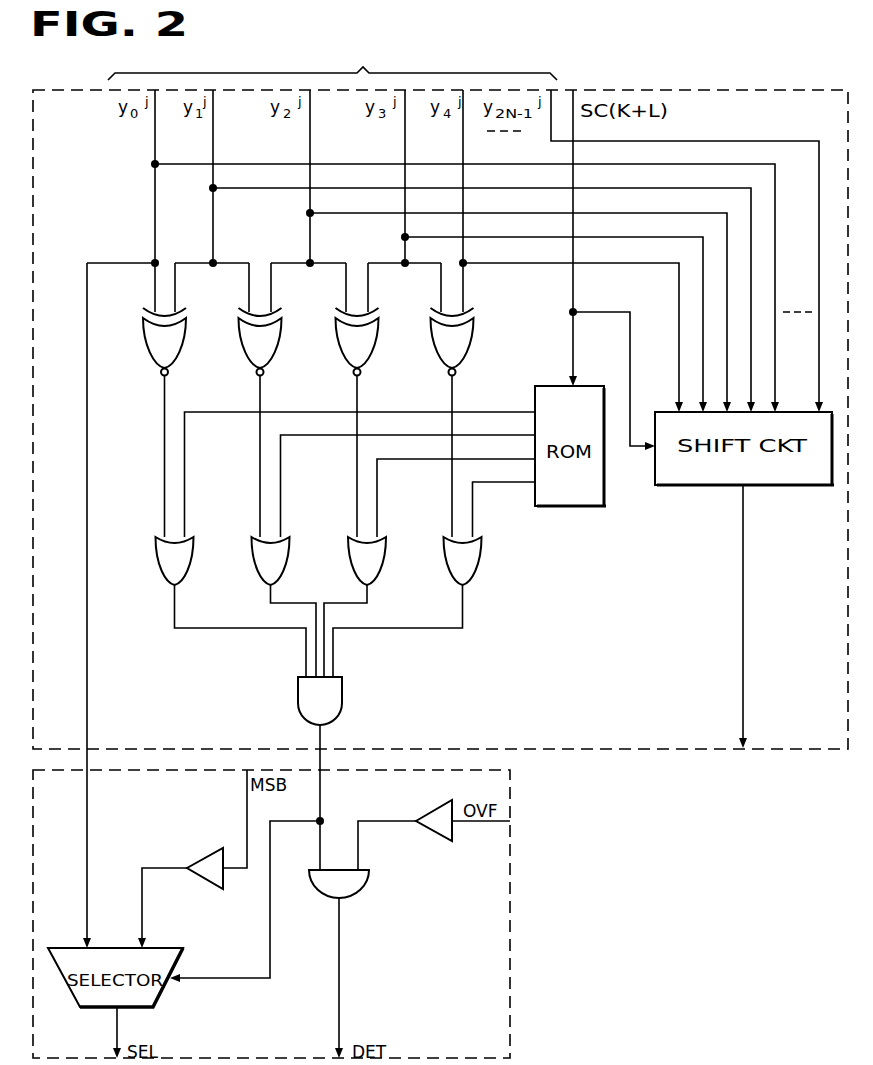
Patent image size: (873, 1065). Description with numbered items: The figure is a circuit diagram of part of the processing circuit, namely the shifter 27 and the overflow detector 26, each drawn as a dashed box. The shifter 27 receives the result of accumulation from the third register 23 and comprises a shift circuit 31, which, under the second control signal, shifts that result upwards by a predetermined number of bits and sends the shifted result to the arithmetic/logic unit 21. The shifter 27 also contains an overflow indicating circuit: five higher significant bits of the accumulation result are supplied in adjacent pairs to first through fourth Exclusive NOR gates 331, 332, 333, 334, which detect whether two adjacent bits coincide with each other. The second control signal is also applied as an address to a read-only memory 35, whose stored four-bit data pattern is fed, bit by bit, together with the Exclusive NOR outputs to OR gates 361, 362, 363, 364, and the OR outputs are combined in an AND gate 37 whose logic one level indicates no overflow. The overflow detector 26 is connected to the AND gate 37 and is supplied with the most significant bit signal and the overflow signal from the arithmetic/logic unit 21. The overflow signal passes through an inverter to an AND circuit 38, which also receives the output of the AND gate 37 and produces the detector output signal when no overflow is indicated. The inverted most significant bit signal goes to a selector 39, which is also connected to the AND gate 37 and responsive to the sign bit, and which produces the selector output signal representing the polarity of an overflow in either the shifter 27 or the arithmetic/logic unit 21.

The arithmetic/logic unit 21 is at (756, 631).
The third register 23 is at (332, 63).
The overflow detector 26 is at (510, 933).
The shifter 27 is at (607, 755).
The shift circuit 31 is at (795, 487).
The read-only memory 35 is at (605, 498).
The AND gate 37 is at (342, 698).
The AND circuit 38 is at (365, 884).
The selector 39 is at (183, 948).
The first Exclusive NOR gate 331 is at (185, 347).
The second Exclusive NOR gate 332 is at (281, 347).
The third Exclusive NOR gate 333 is at (378, 347).
The fourth Exclusive NOR gate 334 is at (473, 347).
The OR gate 361 is at (190, 557).
The OR gate 362 is at (287, 553).
The OR gate 363 is at (384, 553).
The OR gate 364 is at (480, 553).